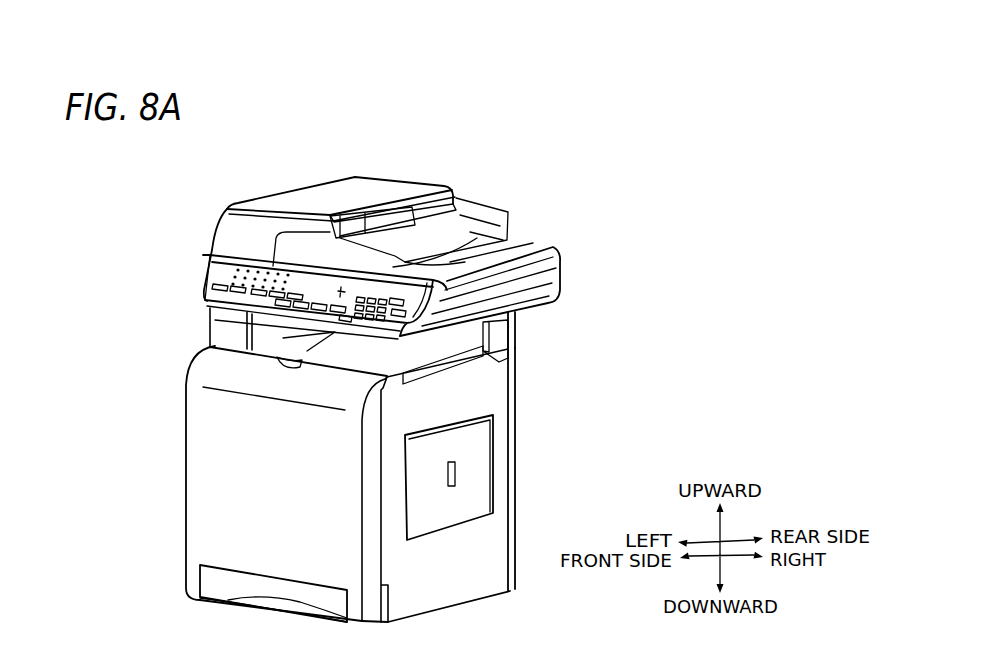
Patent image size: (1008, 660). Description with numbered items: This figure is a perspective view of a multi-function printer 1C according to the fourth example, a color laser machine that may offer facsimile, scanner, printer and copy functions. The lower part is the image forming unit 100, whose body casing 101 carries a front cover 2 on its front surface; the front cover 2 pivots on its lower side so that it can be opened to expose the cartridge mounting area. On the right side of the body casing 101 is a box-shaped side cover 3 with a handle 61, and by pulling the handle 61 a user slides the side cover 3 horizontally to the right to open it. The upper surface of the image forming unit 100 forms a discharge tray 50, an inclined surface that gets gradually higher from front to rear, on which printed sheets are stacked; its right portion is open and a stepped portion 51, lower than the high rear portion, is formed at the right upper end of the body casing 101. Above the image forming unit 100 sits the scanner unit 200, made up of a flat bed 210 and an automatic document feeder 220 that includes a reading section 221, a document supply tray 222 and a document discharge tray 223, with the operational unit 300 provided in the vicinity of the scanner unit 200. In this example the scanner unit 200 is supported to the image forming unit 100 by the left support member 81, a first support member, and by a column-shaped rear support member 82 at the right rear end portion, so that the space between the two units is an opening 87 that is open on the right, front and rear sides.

The multi-function printer 1C is at (636, 149).
The image forming unit 100 is at (546, 388).
The body casing 101 is at (527, 434).
The front cover 2 is at (205, 470).
The side cover 3 is at (482, 457).
The handle 61 is at (455, 475).
The discharge tray 50 is at (502, 333).
The stepped portion 51 is at (497, 367).
The left support member 81 is at (225, 328).
The rear support member 82 is at (516, 345).
The opening 87 is at (272, 338).
The scanner unit 200 is at (516, 190).
The flat bed 210 is at (555, 279).
The automatic document feeder 220 is at (391, 175).
The reading section 221 is at (318, 198).
The document supply tray 222 is at (452, 207).
The document discharge tray 223 is at (472, 257).
The operational unit 300 is at (209, 265).